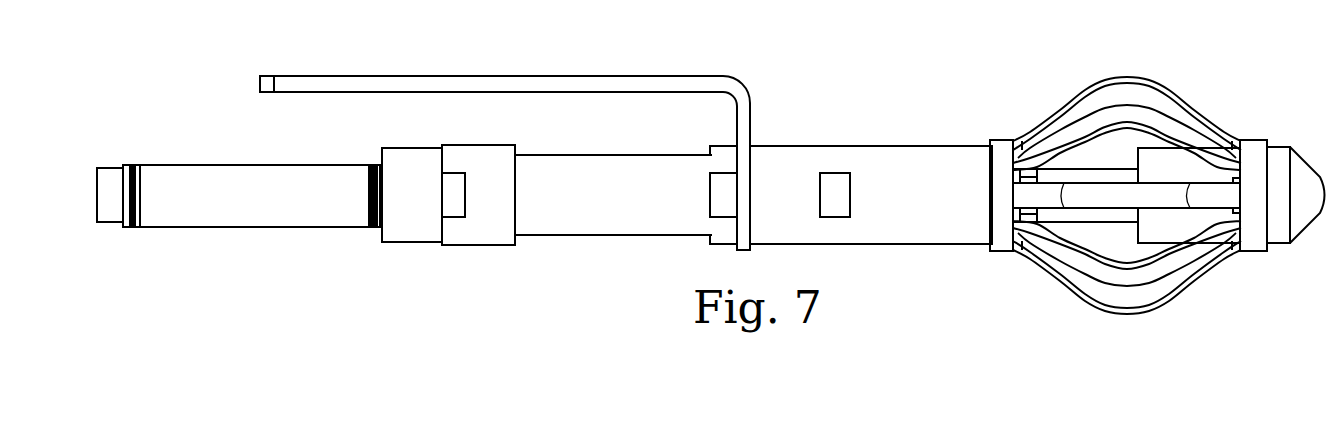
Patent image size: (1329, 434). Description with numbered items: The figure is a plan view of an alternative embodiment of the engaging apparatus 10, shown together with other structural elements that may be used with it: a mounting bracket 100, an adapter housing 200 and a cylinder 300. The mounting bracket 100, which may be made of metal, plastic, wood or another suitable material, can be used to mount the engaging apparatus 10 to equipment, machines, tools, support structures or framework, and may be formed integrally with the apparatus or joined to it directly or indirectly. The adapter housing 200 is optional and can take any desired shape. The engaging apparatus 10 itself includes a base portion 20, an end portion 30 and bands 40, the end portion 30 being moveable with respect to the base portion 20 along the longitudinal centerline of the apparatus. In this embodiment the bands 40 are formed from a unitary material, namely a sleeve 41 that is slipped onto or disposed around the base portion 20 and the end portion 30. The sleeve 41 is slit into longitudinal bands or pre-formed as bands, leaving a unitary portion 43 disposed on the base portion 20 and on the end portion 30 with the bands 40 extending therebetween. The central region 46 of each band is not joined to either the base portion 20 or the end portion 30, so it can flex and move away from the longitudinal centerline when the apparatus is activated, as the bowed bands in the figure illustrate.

The engaging apparatus 10 is at (931, 83).
The base portion 20 is at (855, 240).
The end portion 30 is at (1283, 157).
The bands 40 is at (1185, 100).
The sleeve 41 is at (1254, 152).
The unitary portion 43 is at (1003, 152).
The central region 46 is at (1130, 313).
The mounting bracket 100 is at (284, 87).
The adapter housing 200 is at (568, 230).
The cylinder 300 is at (210, 215).